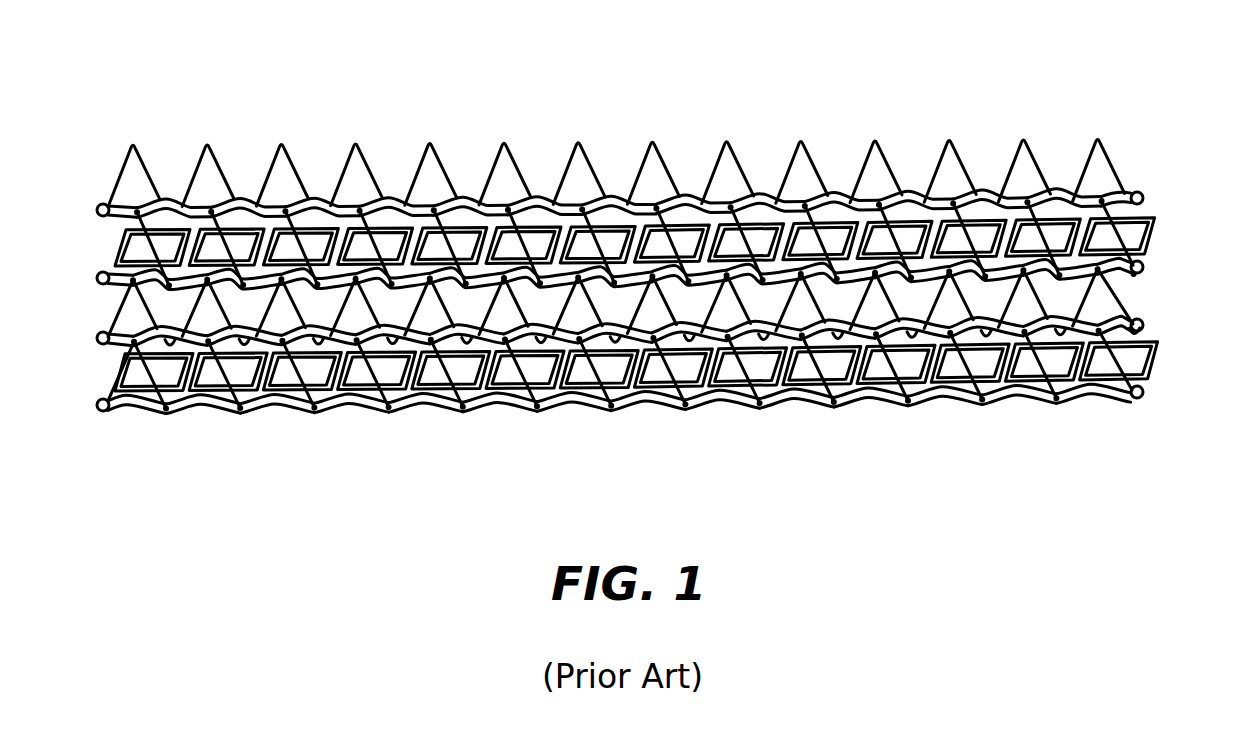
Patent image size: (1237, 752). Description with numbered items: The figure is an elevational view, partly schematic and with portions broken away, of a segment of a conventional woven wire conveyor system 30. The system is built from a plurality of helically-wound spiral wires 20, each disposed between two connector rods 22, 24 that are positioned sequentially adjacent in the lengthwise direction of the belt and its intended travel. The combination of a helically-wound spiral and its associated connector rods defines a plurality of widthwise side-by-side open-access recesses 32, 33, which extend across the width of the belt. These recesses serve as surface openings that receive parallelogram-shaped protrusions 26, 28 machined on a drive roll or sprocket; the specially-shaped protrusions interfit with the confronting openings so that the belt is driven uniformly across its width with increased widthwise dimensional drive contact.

The helically-wound spiral wire 20 is at (1127, 378).
The connector rod 22 is at (1122, 303).
The connector rod 24 is at (1110, 399).
The specially-shaped protrusion 26 is at (951, 401).
The specially-shaped protrusion 28 is at (1030, 400).
The woven wire conveyor system 30 is at (793, 66).
The open-access recess 32 is at (88, 236).
The second row of strut cells 33 is at (88, 378).